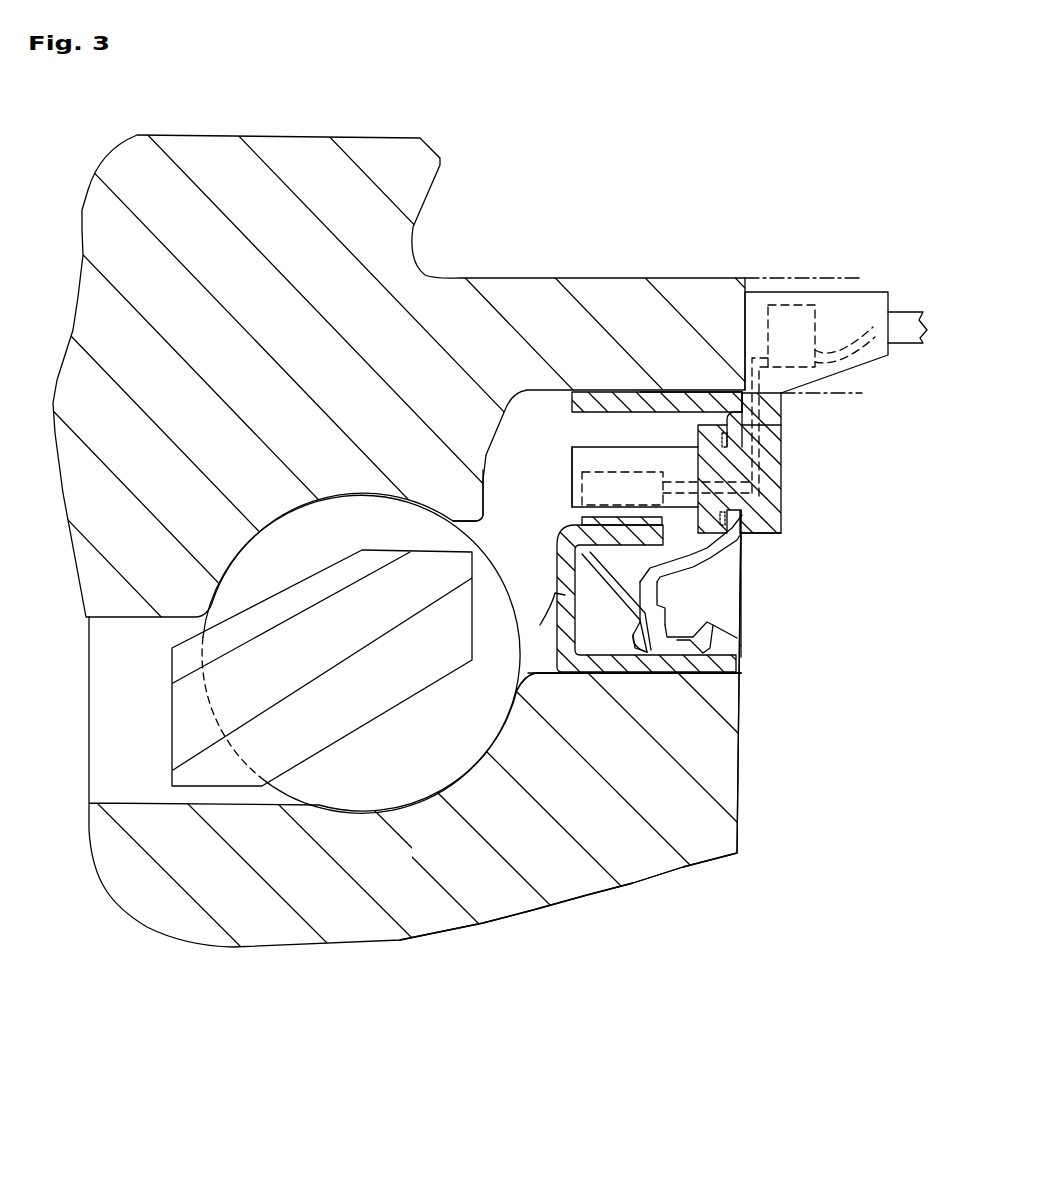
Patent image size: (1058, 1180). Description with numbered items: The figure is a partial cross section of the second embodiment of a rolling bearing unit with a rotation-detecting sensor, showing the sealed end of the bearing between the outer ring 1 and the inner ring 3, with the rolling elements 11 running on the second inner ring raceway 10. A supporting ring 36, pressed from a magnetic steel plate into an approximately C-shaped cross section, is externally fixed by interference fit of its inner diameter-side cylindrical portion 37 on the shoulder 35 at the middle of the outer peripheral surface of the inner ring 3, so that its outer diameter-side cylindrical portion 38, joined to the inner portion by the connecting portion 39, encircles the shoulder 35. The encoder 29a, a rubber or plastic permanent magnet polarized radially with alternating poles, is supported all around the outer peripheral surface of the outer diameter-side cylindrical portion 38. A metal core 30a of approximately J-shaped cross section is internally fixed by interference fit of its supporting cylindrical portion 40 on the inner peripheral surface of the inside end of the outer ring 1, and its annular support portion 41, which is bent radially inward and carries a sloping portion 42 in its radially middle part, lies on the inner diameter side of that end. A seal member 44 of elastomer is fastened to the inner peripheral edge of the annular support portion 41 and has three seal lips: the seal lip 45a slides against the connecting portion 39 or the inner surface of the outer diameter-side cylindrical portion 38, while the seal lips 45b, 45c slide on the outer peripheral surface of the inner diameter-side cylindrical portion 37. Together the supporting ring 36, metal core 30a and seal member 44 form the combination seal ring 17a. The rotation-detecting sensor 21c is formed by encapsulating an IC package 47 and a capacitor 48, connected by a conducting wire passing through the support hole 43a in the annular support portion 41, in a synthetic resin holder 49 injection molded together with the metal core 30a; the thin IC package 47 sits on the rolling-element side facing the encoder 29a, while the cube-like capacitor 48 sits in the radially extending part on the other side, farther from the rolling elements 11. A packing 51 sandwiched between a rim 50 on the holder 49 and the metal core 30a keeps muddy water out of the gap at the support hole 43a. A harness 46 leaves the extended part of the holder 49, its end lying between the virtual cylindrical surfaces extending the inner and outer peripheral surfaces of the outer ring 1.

The outer ring 1 is at (210, 187).
The inner ring 3 is at (248, 878).
The second inner ring raceway 10 is at (450, 783).
The rolling elements 11 is at (293, 547).
The combination seal ring 17a is at (481, 508).
The rotation-detecting sensor 21c is at (632, 462).
The encoder 29a is at (566, 445).
The metal core 30a is at (668, 403).
The shoulder 35 is at (568, 677).
The supporting ring 36 is at (650, 670).
The inner diameter-side cylindrical portion 37 is at (737, 697).
The outer diameter-side cylindrical portion 38 is at (579, 527).
The connecting portion 39 is at (540, 625).
The supporting cylindrical portion 40 is at (633, 408).
The annular support portion 41 is at (770, 533).
The sloping portion 42 is at (743, 577).
The support hole 43a is at (775, 462).
The seal member 44 is at (675, 670).
The seal lip 45a is at (575, 553).
The seal lip 45b is at (622, 672).
The seal lip 45c is at (732, 637).
The harness 46 is at (905, 320).
The IC package 47 is at (607, 490).
The capacitor 48 is at (788, 320).
The holder 49 is at (772, 483).
The rim 50 is at (725, 450).
The packing 51 is at (747, 447).